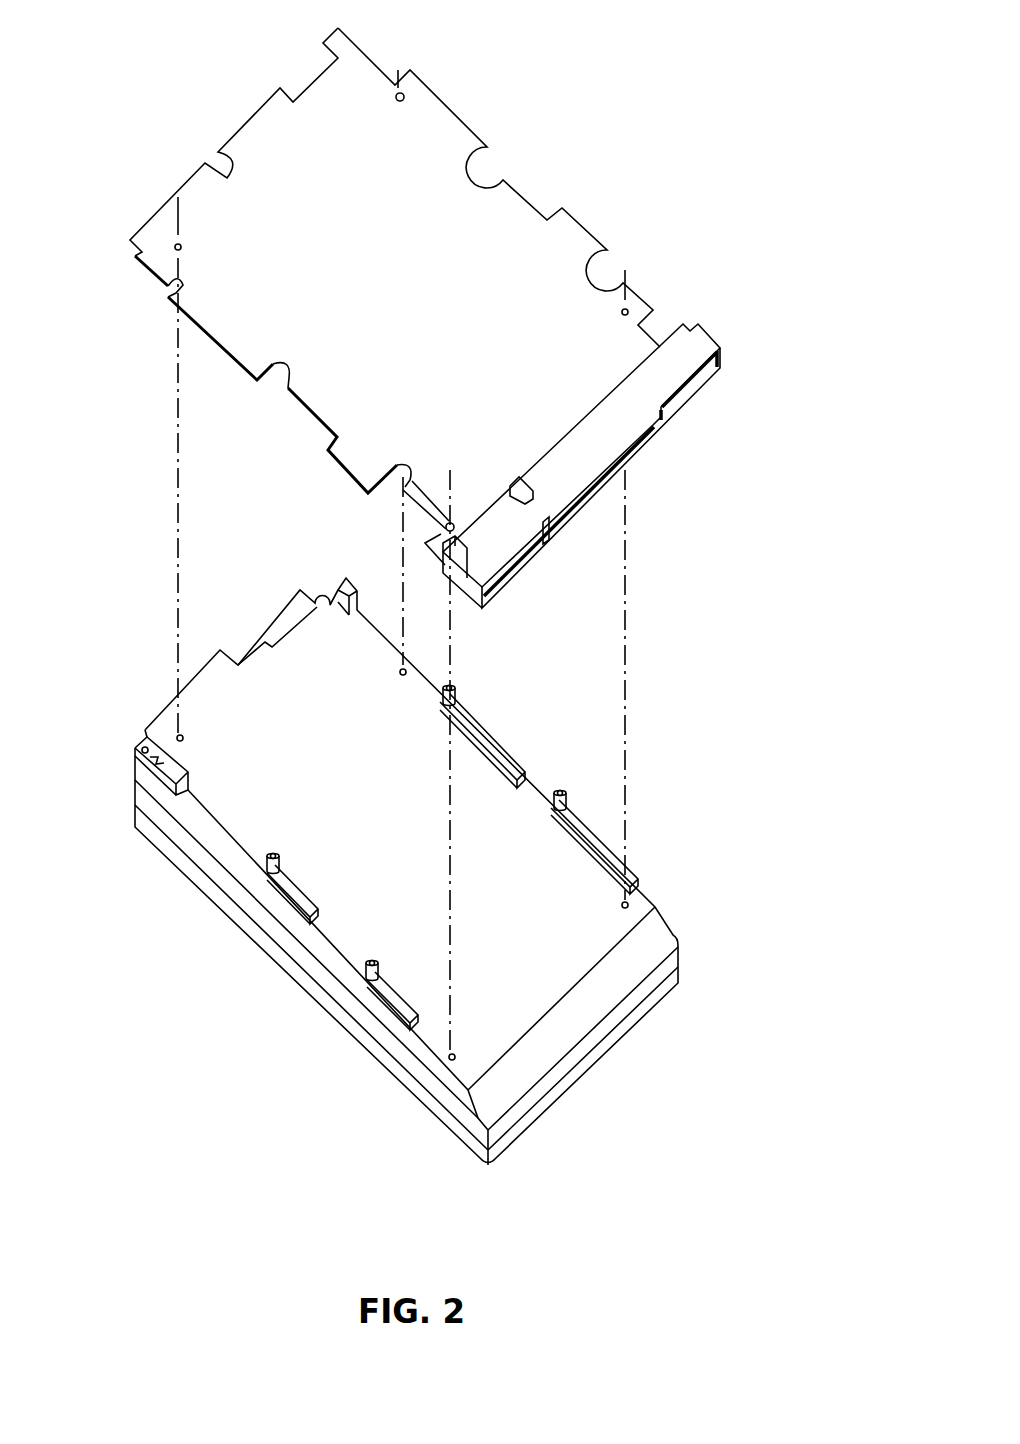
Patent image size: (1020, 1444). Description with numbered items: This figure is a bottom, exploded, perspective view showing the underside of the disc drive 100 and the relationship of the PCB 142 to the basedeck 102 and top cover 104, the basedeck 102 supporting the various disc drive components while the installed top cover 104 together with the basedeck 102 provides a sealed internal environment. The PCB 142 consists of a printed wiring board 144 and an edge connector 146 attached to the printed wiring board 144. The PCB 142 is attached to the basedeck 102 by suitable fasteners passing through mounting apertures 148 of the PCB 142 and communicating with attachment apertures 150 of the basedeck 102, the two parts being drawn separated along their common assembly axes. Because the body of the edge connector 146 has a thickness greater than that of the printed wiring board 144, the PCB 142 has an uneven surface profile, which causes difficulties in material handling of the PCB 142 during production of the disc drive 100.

The disc drive 100 is at (614, 97).
The basedeck 102 is at (307, 997).
The top cover 104 is at (625, 957).
The PCB 142 is at (138, 199).
The printed wiring board 144 is at (228, 303).
The edge connector 146 is at (683, 363).
The mounting apertures 148 is at (404, 93).
The attachment apertures 150 is at (178, 735).